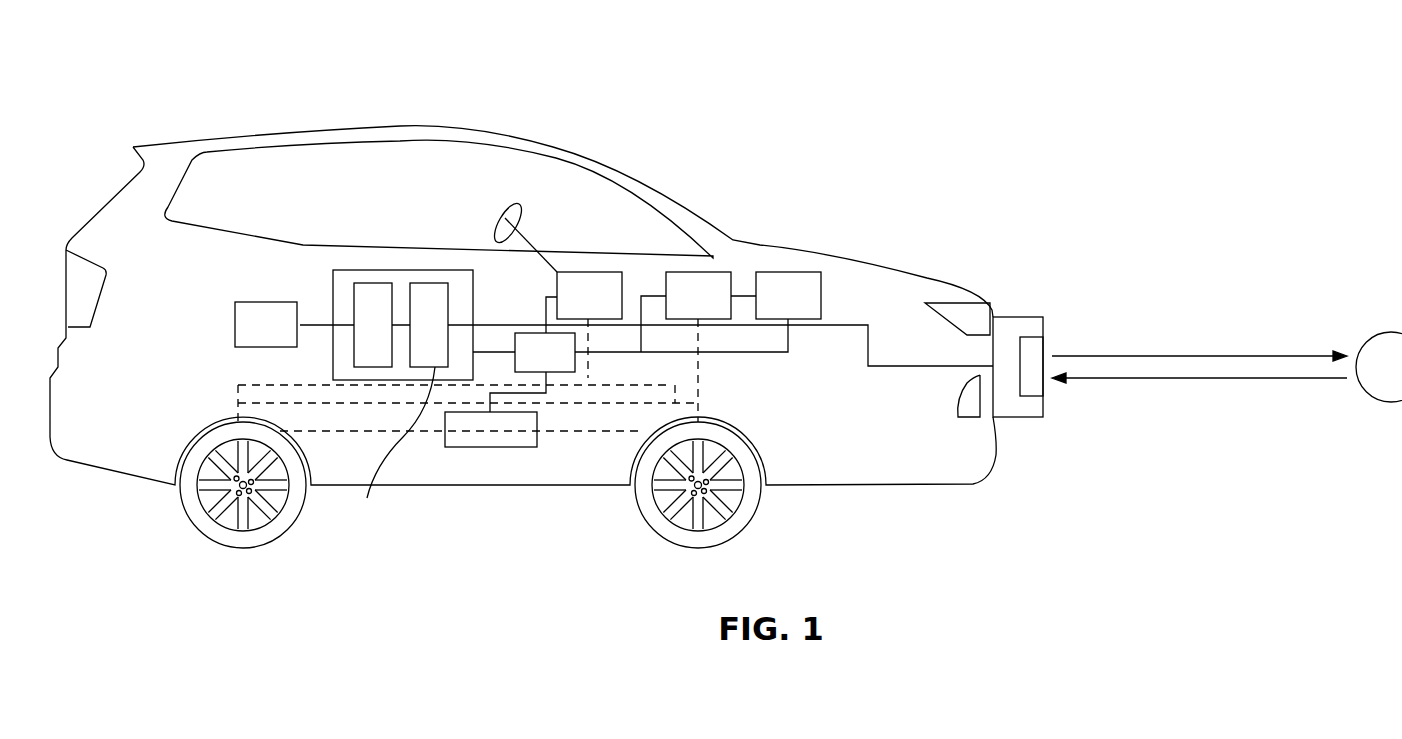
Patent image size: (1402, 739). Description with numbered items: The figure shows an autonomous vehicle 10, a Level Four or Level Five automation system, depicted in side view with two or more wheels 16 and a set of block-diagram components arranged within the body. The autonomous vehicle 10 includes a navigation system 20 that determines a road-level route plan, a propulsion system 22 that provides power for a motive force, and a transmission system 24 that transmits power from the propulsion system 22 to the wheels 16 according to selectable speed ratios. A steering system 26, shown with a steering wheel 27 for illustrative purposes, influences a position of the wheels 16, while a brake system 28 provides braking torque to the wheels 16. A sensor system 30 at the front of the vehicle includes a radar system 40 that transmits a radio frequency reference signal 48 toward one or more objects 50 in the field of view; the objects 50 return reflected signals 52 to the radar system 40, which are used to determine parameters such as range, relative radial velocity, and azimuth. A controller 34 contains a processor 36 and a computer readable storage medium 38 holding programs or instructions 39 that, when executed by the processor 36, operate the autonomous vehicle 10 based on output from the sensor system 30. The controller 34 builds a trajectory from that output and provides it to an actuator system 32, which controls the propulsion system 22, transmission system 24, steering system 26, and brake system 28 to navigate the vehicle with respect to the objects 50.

The autonomous vehicle 10 is at (648, 38).
The wheels 16 is at (285, 530).
The navigation system 20 is at (267, 302).
The propulsion system 22 is at (800, 272).
The transmission system 24 is at (685, 272).
The steering system 26 is at (590, 272).
The steering wheel 27 is at (497, 203).
The brake system 28 is at (490, 447).
The sensor system 30 is at (1018, 294).
The actuator system 32 is at (531, 366).
The controller 34 is at (397, 277).
The processor 36 is at (373, 283).
The storage medium 38 is at (428, 283).
The programs or instructions 39 is at (393, 448).
The radar system 40 is at (1024, 396).
The reference signal 48 is at (1200, 356).
The objects 50 is at (1388, 332).
The reflected signals 52 is at (1200, 378).